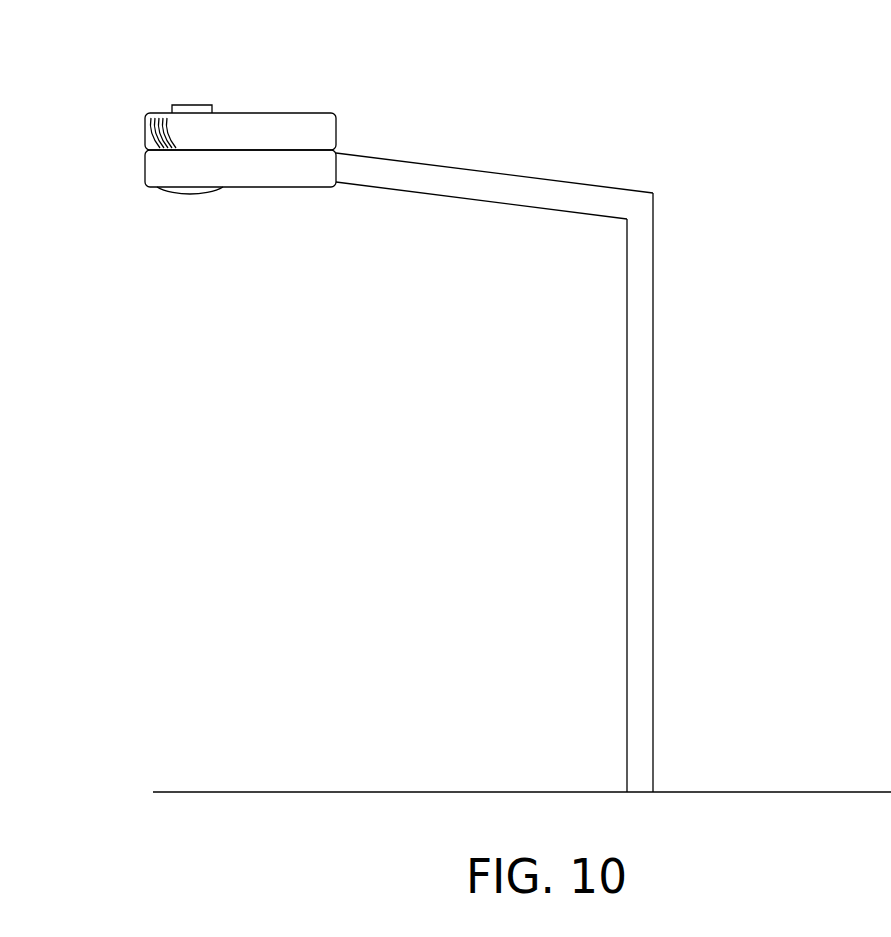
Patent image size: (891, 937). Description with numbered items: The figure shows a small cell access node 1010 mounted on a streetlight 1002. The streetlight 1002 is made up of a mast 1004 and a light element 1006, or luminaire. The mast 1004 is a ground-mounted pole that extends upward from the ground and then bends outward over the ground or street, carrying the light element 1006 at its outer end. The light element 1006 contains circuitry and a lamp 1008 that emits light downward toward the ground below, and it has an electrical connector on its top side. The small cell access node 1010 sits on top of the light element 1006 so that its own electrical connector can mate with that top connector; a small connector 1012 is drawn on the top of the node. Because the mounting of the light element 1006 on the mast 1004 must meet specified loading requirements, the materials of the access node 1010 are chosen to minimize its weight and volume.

The streetlight 1002 is at (656, 208).
The mast 1004 is at (656, 338).
The light element 1006 is at (300, 188).
The lamp 1008 is at (188, 194).
The small cell access node 1010 is at (336, 113).
The sensor 1012 is at (188, 105).